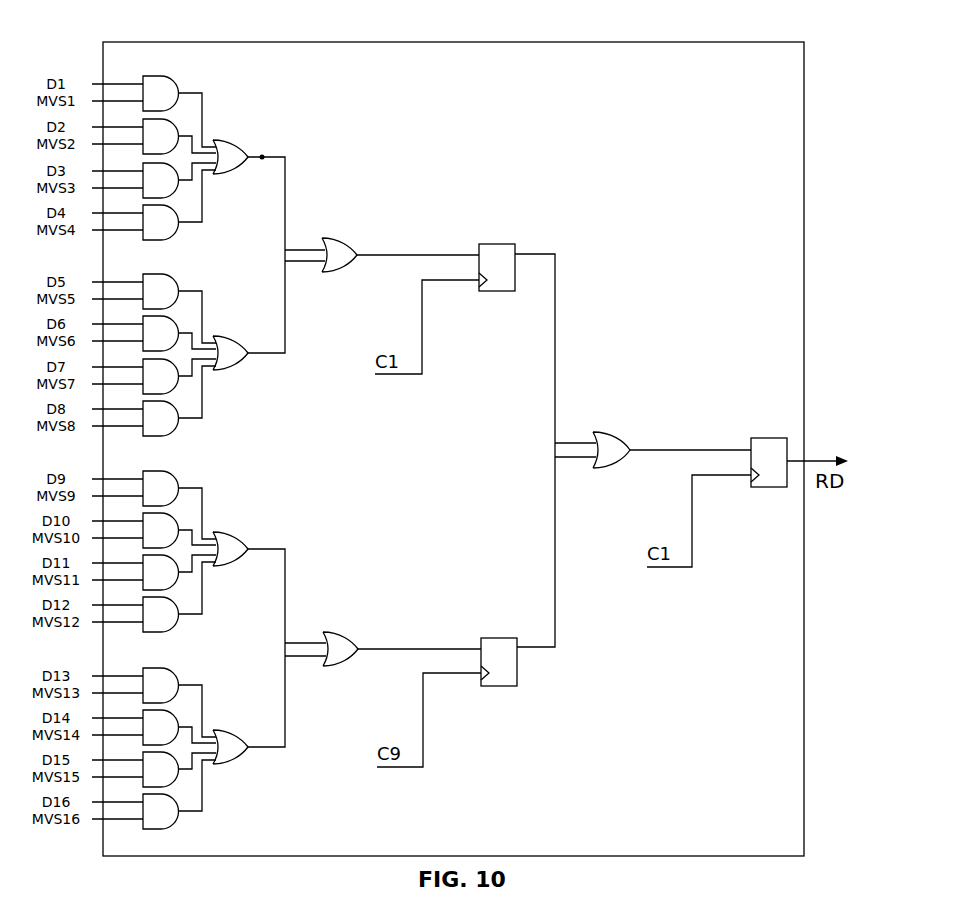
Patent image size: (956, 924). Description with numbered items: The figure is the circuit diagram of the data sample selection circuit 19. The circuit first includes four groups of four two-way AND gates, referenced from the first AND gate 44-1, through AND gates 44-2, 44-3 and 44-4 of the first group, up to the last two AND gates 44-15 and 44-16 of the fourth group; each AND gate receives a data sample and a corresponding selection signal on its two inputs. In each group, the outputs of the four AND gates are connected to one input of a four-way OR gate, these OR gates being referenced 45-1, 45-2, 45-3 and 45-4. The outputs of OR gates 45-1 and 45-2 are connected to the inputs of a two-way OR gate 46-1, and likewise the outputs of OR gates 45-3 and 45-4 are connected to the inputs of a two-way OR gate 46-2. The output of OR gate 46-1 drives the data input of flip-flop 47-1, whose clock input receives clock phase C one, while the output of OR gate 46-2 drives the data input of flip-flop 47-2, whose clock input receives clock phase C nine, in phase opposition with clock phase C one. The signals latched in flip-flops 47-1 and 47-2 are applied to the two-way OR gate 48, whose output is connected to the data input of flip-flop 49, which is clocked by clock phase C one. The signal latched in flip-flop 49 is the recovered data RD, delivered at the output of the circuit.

The data sample selection circuit 19 is at (822, 76).
The two-way AND gate 44-1 is at (168, 76).
The two-way AND gate 44-2 is at (195, 118).
The two-way AND gate 44-3 is at (179, 191).
The two-way AND gate 44-4 is at (172, 236).
The two-way AND gate 44-15 is at (181, 772).
The two-way AND gate 44-16 is at (173, 822).
The four-way OR gate 45-1 is at (235, 141).
The four-way OR gate 45-2 is at (237, 366).
The four-way OR gate 45-3 is at (242, 541).
The four-way OR gate 45-4 is at (243, 752).
The two-way OR gate 46-1 is at (348, 243).
The two-way OR gate 46-2 is at (346, 637).
The flip-flop 47-1 is at (503, 244).
The flip-flop 47-2 is at (505, 634).
The two-way OR gate 48 is at (617, 437).
The flip-flop 49 is at (770, 437).